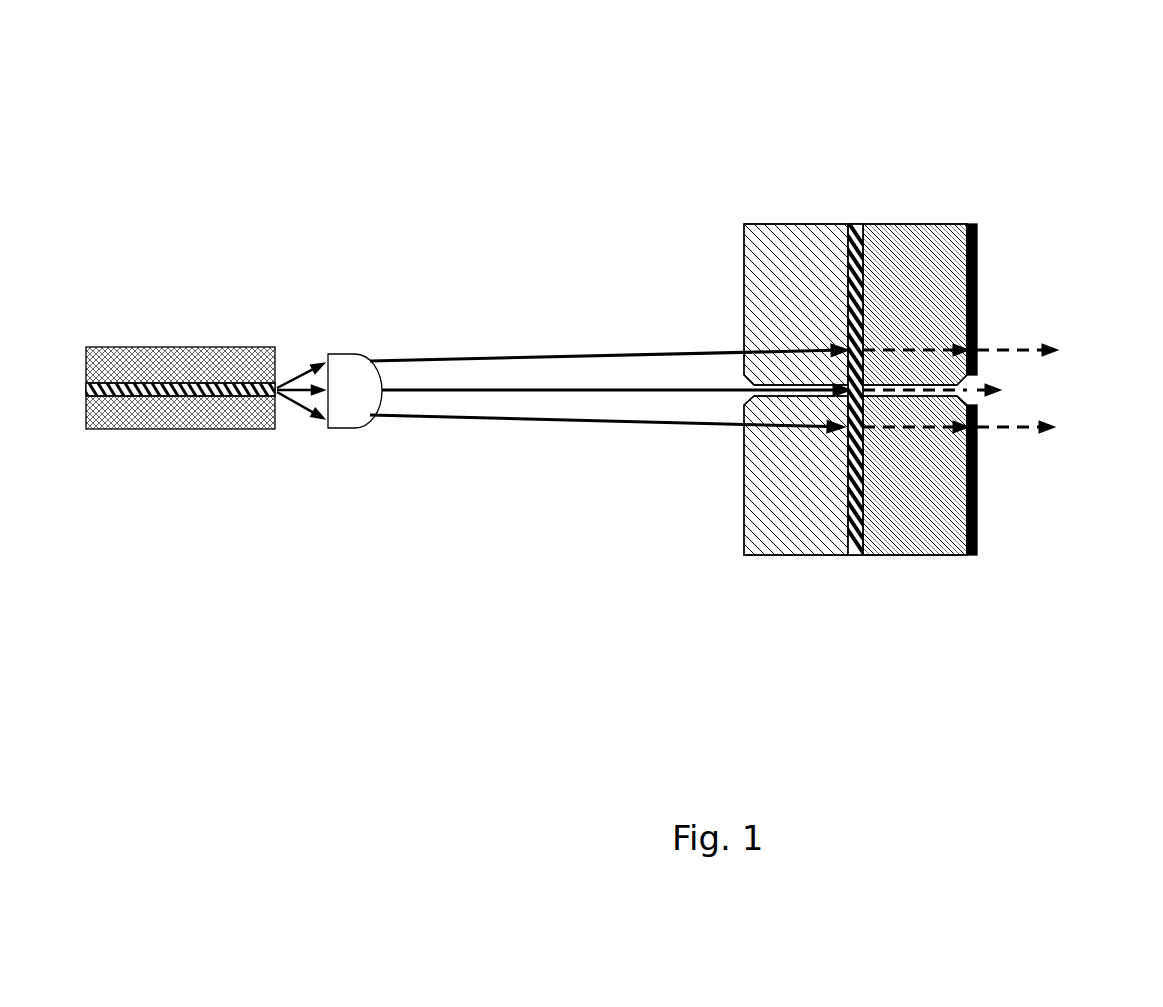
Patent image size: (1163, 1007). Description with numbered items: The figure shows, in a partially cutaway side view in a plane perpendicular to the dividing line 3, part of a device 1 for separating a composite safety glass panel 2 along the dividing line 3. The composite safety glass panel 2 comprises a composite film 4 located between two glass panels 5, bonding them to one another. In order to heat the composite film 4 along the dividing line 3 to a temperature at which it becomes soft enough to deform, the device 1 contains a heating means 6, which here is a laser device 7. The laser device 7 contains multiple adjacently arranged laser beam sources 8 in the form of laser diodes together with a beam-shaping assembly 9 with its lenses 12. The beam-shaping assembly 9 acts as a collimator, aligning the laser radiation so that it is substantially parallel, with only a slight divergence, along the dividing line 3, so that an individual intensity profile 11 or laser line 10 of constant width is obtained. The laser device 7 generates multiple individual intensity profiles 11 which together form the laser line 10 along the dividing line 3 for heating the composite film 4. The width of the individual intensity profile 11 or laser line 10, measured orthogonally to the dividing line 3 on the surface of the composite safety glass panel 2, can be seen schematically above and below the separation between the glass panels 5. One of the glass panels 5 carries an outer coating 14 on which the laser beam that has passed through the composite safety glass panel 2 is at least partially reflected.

The device 1 is at (150, 177).
The composite safety glass panel 2 is at (905, 400).
The dividing line 3 is at (745, 396).
The composite film 4 is at (855, 236).
The glass panels 5 is at (778, 236).
The heating means 6 is at (378, 528).
The laser device 7 is at (330, 540).
The laser beam source 8 is at (177, 430).
The beam-shaping assembly 9 is at (323, 253).
The laser line 10 is at (712, 260).
The individual intensity profile 11 is at (745, 348).
The lenses 12 is at (348, 347).
The coating 14 is at (977, 248).